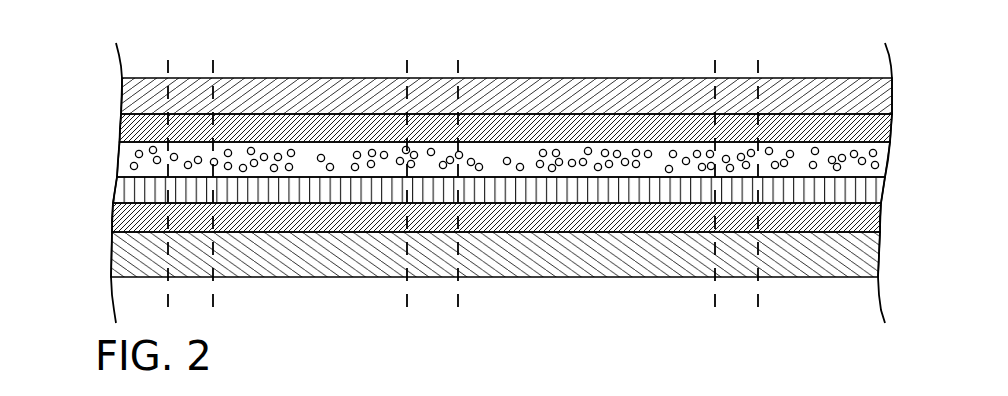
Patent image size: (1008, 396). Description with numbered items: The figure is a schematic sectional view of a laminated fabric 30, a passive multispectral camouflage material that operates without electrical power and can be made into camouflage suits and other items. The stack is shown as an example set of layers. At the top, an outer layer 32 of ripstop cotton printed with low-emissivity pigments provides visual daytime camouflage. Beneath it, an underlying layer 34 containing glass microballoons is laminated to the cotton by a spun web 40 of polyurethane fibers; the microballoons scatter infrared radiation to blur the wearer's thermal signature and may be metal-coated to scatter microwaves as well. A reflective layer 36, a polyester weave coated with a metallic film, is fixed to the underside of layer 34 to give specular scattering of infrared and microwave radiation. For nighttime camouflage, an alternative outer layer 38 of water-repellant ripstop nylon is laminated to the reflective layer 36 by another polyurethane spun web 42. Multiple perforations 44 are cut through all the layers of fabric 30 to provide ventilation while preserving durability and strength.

The laminated fabric 30 is at (904, 65).
The outer layer 32 is at (133, 94).
The spun web 40 is at (132, 126).
The underlying layer 34 is at (130, 158).
The reflective layer 36 is at (133, 193).
The polyurethane spun web 42 is at (133, 223).
The alternative outer layer 38 is at (133, 257).
The perforations 44 is at (190, 78).